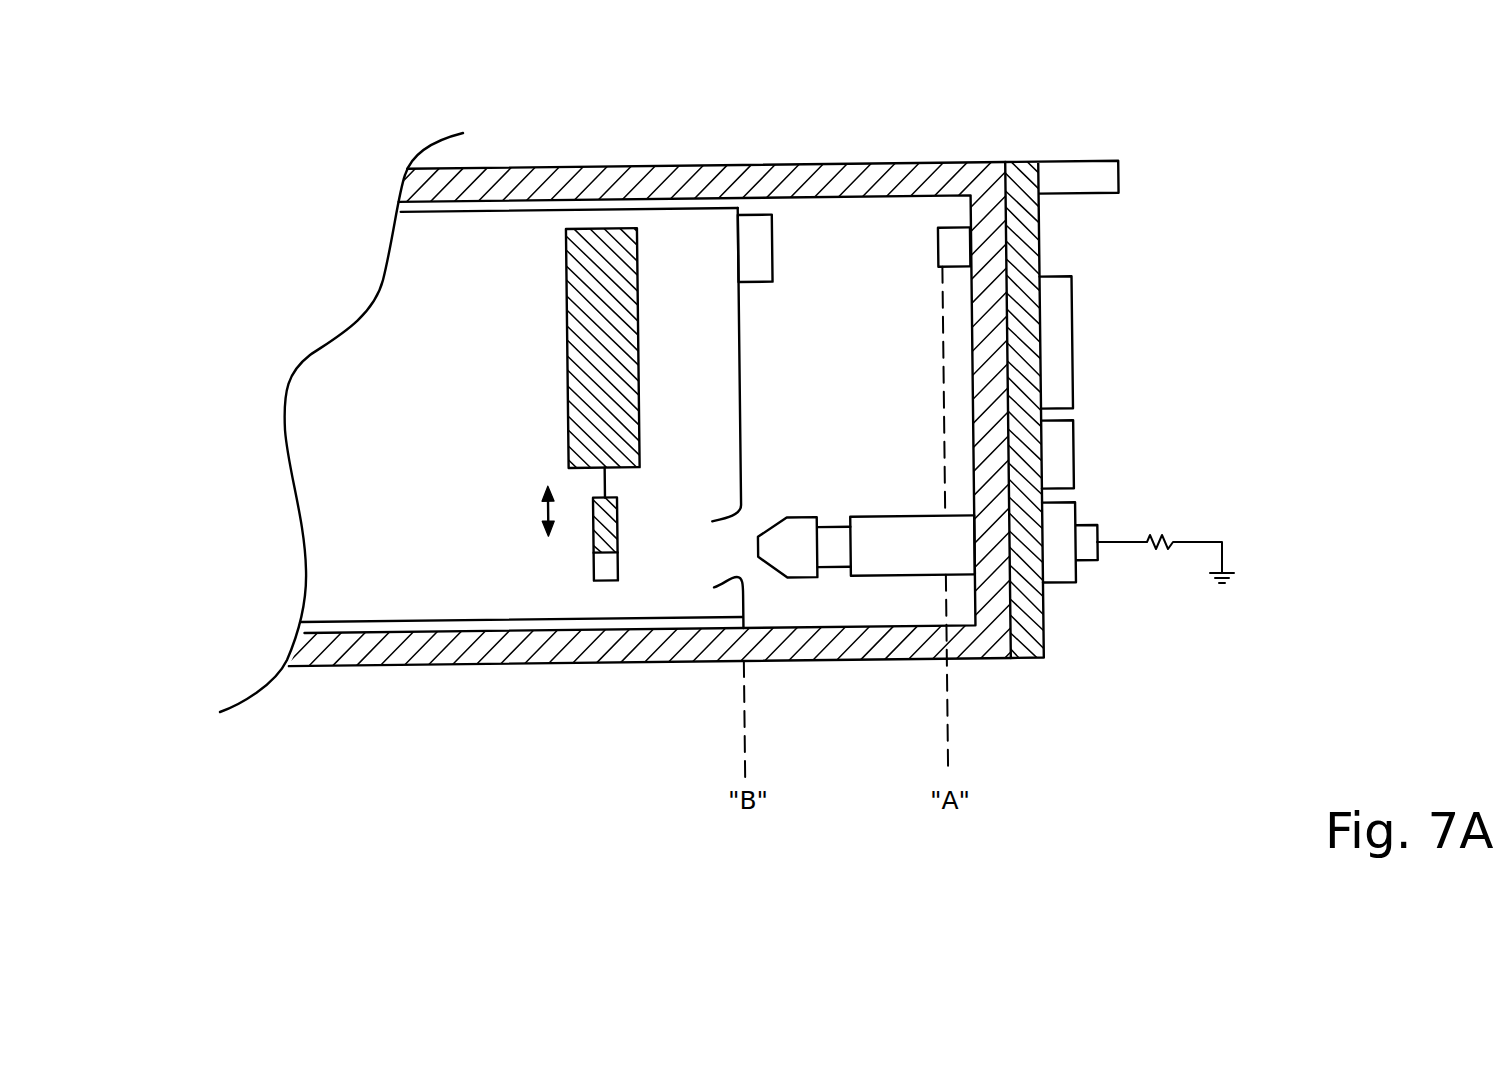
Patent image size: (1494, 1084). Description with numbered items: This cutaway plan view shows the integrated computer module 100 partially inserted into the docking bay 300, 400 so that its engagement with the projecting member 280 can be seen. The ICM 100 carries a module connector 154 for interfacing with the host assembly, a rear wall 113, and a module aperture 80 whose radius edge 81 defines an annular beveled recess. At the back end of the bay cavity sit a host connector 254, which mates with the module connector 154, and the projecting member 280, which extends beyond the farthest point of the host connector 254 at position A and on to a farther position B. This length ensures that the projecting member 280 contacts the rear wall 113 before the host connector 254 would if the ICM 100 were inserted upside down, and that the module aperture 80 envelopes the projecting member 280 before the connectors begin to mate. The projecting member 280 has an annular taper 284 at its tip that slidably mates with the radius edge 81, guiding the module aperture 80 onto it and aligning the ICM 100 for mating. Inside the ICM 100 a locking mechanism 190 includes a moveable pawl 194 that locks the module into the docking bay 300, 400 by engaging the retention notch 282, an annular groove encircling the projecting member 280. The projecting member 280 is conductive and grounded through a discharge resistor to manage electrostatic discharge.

The integrated computer module 100 is at (448, 585).
The docking bay 300 is at (620, 183).
The docking bay 400 is at (956, 369).
The rear wall 113 is at (742, 367).
The module connector 154 is at (772, 247).
The host connector 254 is at (957, 242).
The locking mechanism 190 is at (523, 361).
The moveable pawl 194 is at (605, 580).
The projecting member 280 is at (892, 500).
The retention notch 282 is at (837, 568).
The annular taper 284 is at (780, 519).
The module aperture 80 is at (712, 542).
The radius edge 81 is at (742, 580).